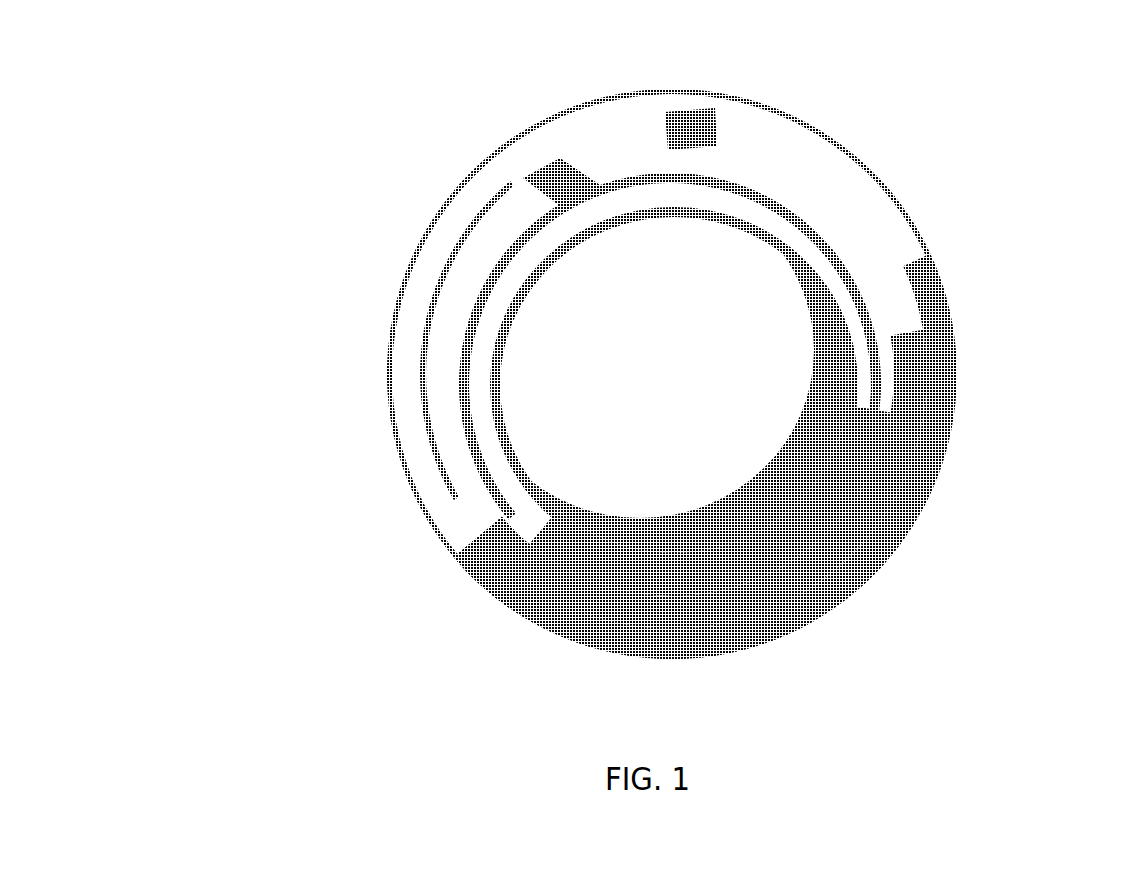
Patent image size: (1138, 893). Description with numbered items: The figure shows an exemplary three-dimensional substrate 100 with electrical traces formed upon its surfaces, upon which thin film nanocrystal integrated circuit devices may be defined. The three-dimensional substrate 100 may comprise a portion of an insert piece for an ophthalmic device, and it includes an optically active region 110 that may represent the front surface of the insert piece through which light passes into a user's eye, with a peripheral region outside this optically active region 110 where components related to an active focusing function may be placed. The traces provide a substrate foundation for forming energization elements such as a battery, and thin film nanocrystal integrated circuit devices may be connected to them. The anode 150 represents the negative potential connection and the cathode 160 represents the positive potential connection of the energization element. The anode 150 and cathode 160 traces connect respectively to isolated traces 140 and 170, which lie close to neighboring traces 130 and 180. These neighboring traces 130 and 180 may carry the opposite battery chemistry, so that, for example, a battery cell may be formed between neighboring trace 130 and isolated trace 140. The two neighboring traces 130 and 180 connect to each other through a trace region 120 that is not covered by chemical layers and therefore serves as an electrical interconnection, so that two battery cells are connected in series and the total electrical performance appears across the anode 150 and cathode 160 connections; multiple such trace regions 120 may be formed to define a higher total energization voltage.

The three-dimensional substrate 100 is at (323, 80).
The optically active region 110 is at (543, 300).
The trace region 120 is at (717, 140).
The neighboring trace 130 is at (895, 377).
The isolated trace 140 is at (893, 493).
The anode 150 is at (678, 632).
The cathode 160 is at (620, 632).
The isolated trace 170 is at (483, 533).
The neighboring trace 180 is at (425, 495).